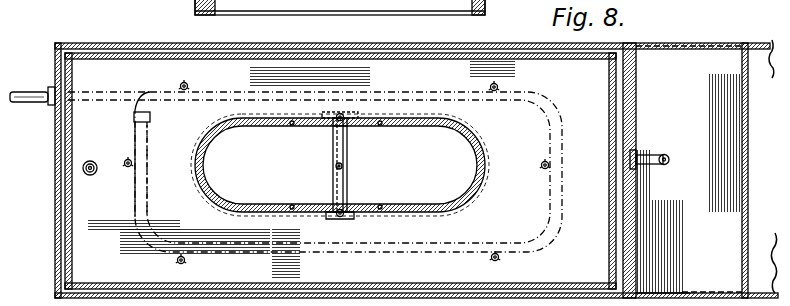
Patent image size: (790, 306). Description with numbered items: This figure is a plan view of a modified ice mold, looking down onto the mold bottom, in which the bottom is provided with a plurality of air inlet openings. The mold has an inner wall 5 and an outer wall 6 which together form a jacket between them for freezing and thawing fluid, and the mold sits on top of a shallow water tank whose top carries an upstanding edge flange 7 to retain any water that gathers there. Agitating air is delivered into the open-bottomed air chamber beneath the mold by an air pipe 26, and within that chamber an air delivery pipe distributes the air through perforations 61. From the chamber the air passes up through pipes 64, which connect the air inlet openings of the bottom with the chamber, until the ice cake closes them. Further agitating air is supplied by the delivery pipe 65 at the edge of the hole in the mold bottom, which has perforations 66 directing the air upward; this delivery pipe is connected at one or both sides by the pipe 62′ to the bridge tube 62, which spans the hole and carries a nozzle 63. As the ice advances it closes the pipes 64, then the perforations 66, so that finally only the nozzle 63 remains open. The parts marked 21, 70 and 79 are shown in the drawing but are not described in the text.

The air pipe 26 is at (22, 90).
The outer wall 6 is at (55, 216).
The inner wall 5 is at (73, 262).
The side wall 21 is at (746, 100).
The partition wall 70 is at (660, 221).
The upstanding edge flange 7 is at (663, 277).
The perforations 61 is at (148, 162).
The perforations 66 is at (206, 139).
The bridge tube 62 is at (347, 180).
The connecting pipe 62′ is at (343, 115).
The nozzle 63 is at (335, 166).
The delivery pipe 65 is at (359, 138).
The pipes 64 is at (190, 84).
The bearing 79 is at (90, 177).